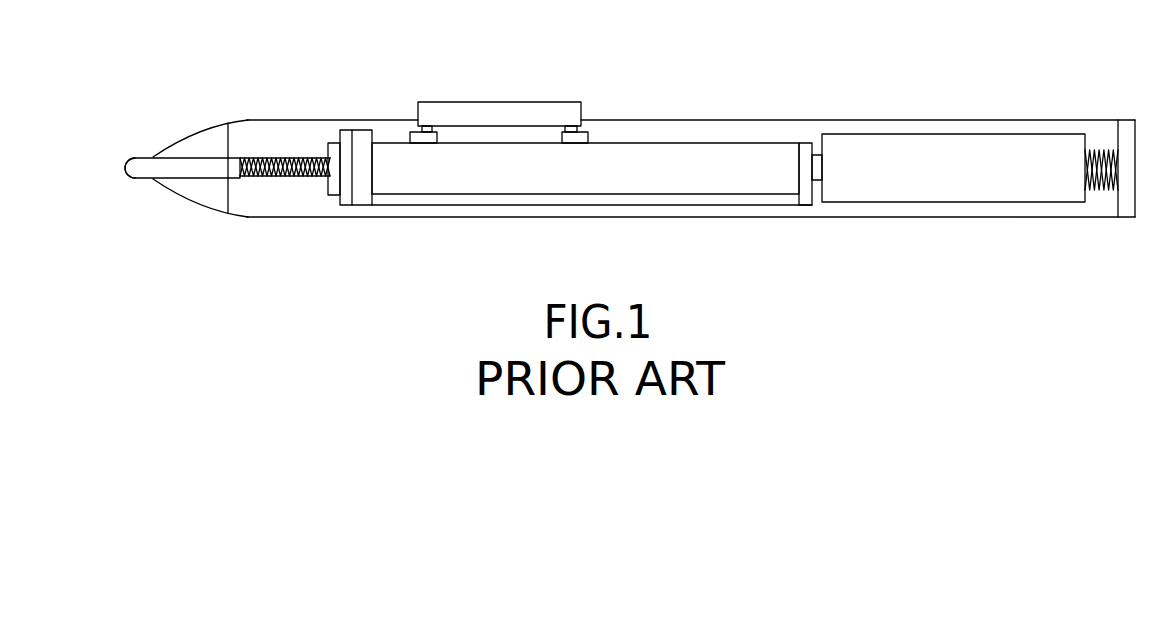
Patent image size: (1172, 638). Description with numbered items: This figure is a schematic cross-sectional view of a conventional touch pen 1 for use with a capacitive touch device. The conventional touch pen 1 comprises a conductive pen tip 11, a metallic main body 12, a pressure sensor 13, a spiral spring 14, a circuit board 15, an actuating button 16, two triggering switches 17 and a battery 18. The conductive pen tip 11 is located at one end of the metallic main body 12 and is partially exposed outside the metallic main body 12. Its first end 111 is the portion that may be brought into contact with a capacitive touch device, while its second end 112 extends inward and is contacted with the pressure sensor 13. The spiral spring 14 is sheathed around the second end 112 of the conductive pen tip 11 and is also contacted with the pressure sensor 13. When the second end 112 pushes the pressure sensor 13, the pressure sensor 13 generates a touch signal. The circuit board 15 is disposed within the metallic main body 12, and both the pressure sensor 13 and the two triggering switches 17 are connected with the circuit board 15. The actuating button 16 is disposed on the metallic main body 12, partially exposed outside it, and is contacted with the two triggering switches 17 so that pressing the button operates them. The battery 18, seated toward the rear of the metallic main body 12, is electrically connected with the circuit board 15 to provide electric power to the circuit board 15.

The conventional touch pen 1 is at (997, 72).
The conductive pen tip 11 is at (177, 171).
The first end 111 is at (123, 167).
The second end 112 is at (270, 177).
The metallic main body 12 is at (775, 118).
The pressure sensor 13 is at (330, 182).
The spiral spring 14 is at (282, 158).
The circuit board 15 is at (693, 175).
The actuating button 16 is at (483, 110).
The triggering switches 17 is at (423, 138).
The battery 18 is at (970, 188).